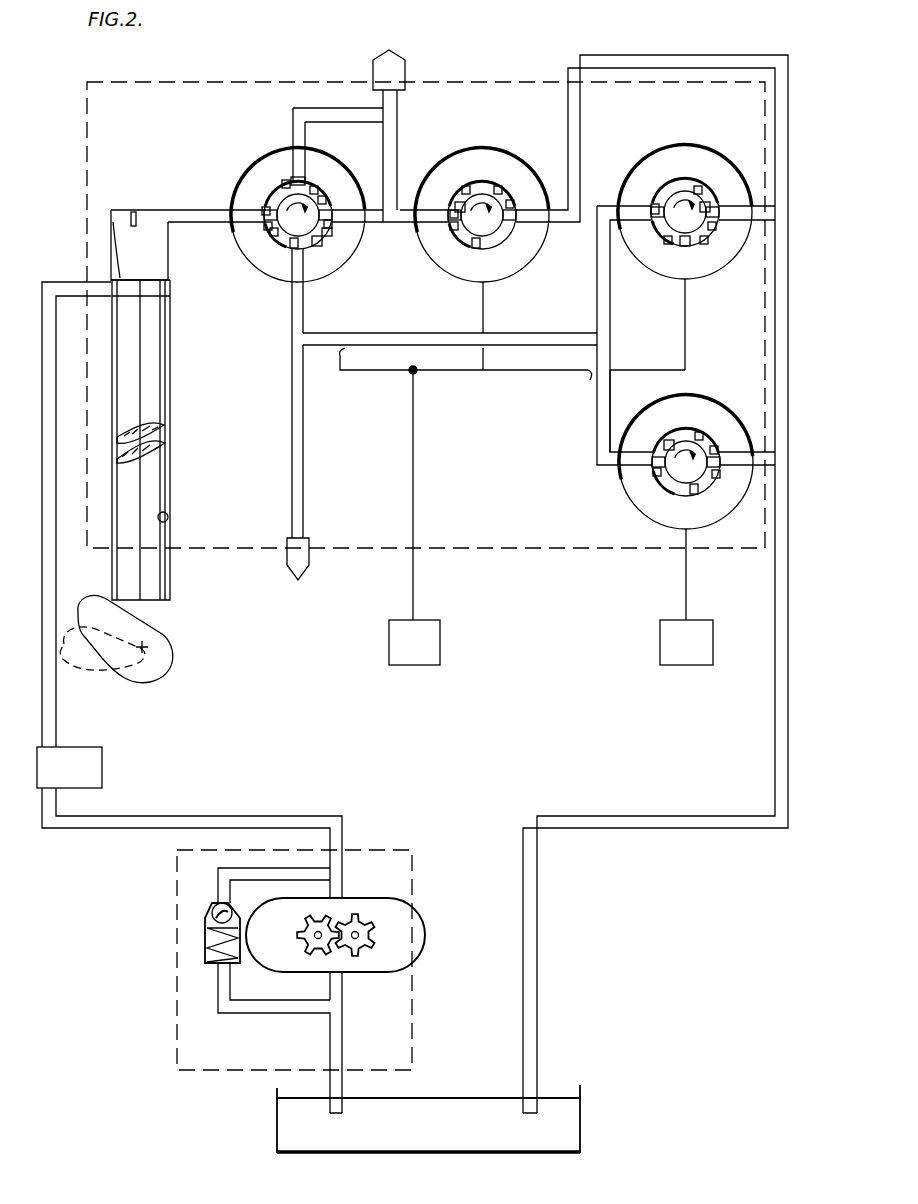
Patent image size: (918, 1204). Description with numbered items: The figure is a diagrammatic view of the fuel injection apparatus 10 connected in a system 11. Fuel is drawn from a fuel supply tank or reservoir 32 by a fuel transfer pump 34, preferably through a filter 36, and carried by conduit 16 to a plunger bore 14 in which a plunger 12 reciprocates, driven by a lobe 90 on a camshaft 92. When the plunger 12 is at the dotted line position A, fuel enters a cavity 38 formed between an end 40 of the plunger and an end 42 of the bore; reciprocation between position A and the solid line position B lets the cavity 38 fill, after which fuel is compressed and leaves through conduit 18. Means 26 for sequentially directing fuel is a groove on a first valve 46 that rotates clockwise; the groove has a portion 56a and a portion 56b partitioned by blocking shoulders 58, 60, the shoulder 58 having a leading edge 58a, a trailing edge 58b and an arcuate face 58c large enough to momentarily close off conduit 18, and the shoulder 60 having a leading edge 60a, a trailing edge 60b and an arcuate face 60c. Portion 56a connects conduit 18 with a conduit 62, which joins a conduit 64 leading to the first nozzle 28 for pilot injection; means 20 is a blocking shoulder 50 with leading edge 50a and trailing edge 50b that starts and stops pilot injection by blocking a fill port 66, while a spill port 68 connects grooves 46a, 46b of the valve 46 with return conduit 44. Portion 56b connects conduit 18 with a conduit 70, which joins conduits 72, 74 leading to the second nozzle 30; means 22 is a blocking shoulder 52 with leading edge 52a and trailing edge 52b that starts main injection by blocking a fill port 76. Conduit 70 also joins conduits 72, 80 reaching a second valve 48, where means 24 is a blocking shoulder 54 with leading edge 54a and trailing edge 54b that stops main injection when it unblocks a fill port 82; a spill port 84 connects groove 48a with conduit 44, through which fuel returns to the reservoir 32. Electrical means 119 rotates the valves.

The fuel injection apparatus 10 is at (243, 80).
The system 11 is at (72, 215).
The plunger 12 is at (168, 376).
The plunger bore 14 is at (168, 517).
The conduit 16 is at (60, 288).
The conduit 18 is at (190, 211).
The means for starting and stopping pilot injection 20 is at (532, 266).
The means for starting main injection 22 is at (675, 142).
The means for stopping main injection 24 is at (618, 490).
The means for sequentially directing fuel 26 is at (362, 262).
The first nozzle 28 is at (400, 80).
The second nozzle 30 is at (302, 572).
The fuel supply tank or reservoir 32 is at (582, 1110).
The fuel transfer pump 34 is at (366, 848).
The filter 36 is at (104, 772).
The cavity 38 is at (139, 245).
The end of plunger 40 is at (162, 281).
The end of bore 42 is at (133, 212).
The conduit 44 is at (772, 345).
The first valve 46 is at (320, 264).
The groove of valve 46 46a is at (498, 186).
The groove of valve 46 46b is at (698, 186).
The second valve 48 is at (714, 446).
The groove of valve 48 48a is at (700, 432).
The blocking shoulder 50 is at (452, 240).
The leading edge 50a is at (452, 216).
The trailing edge 50b is at (476, 252).
The blocking shoulder 52 is at (688, 258).
The leading edge 52a is at (668, 244).
The trailing edge 52b is at (704, 244).
The blocking shoulder 54 is at (656, 476).
The leading edge 54a is at (666, 446).
The trailing edge 54b is at (696, 494).
The portion of groove 56a is at (290, 182).
The portion of groove 56b is at (348, 236).
The blocking shoulder 58 is at (266, 262).
The leading edge 58a is at (262, 214).
The trailing edge 58b is at (292, 262).
The arcuate face 58c is at (268, 236).
The blocking shoulder 60 is at (320, 182).
The leading edge 60a is at (332, 230).
The trailing edge 60b is at (288, 182).
The arcuate face 60c is at (325, 205).
The conduit 62 is at (336, 74).
The conduit 64 is at (405, 106).
The fill port 66 is at (464, 196).
The spill port 68 is at (512, 202).
The conduit 70 is at (304, 298).
The conduit 72 is at (528, 326).
The conduit 74 is at (610, 314).
The fill port 76 is at (652, 208).
The conduit 80 is at (597, 406).
The fill port 82 is at (650, 412).
The spill port 84 is at (716, 478).
The lobe 90 is at (98, 606).
The camshaft 92 is at (155, 652).
The means for rotating valve 119 is at (440, 652).
The dotted line position A is at (160, 302).
The solid line position B is at (113, 222).